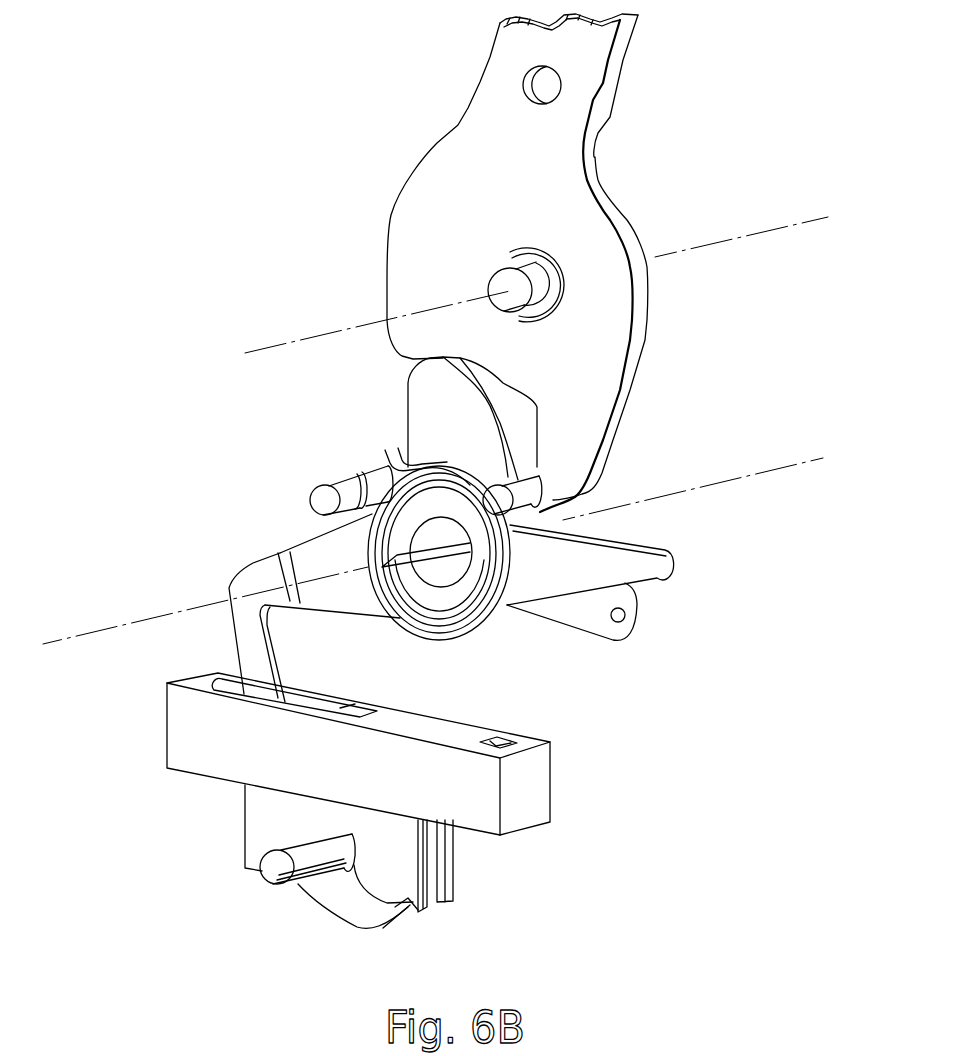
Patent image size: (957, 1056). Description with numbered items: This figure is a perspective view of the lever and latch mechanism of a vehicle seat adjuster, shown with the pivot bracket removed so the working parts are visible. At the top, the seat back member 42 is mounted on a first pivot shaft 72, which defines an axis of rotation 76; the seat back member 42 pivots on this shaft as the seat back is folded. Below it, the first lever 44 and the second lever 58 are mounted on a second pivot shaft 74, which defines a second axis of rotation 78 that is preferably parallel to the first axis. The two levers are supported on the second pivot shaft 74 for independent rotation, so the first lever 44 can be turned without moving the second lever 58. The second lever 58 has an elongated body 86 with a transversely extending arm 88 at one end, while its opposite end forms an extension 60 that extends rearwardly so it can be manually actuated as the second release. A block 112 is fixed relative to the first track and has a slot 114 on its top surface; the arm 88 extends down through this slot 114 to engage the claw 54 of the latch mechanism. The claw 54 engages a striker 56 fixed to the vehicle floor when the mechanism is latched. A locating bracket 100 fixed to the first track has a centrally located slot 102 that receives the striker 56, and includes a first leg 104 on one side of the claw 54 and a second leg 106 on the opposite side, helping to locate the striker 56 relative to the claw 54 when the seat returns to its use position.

The seat back member 42 is at (573, 162).
The first lever 44 is at (420, 403).
The claw 54 is at (343, 910).
The striker 56 is at (275, 878).
The second lever 58 is at (343, 595).
The extension 60 is at (657, 573).
The first pivot shaft 72 is at (503, 266).
The second pivot shaft 74 is at (443, 567).
The axis of rotation 76 is at (750, 232).
The axis of rotation 78 is at (757, 473).
The elongated body 86 is at (303, 543).
The transversely extending arm 88 is at (230, 587).
The locating bracket 100 is at (257, 822).
The slot 102 is at (444, 908).
The first leg 104 is at (409, 905).
The second leg 106 is at (453, 880).
The block 112 is at (540, 768).
The slot 114 is at (328, 703).